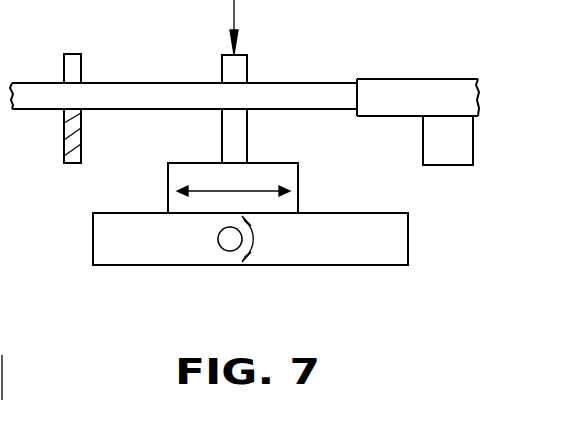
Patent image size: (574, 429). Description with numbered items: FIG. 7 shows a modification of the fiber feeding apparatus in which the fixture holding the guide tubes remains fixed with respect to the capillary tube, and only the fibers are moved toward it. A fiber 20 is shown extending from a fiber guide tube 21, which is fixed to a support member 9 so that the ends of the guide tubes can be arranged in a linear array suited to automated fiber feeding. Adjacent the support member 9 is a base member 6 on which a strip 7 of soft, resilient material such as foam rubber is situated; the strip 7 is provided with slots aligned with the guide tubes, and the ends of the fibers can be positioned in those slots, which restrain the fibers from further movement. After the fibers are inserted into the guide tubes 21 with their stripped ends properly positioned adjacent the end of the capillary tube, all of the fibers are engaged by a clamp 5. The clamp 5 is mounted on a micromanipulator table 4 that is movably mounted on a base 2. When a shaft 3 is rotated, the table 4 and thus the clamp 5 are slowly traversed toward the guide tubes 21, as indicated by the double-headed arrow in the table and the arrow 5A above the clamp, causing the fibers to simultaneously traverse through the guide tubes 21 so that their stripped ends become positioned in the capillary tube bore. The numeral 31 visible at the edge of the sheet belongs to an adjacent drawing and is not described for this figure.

The base 2 is at (317, 253).
The shaft 3 is at (218, 239).
The micromanipulator table 4 is at (298, 182).
The clamp 5 is at (237, 133).
The direction of force 5A is at (237, 10).
The base member 6 is at (65, 142).
The strip of soft, resilient material 7 is at (72, 62).
The support member 9 is at (445, 158).
The fiber 20 is at (136, 88).
The fiber guide tube 21 is at (427, 82).
The adjacent figure element 31 is at (0, 367).